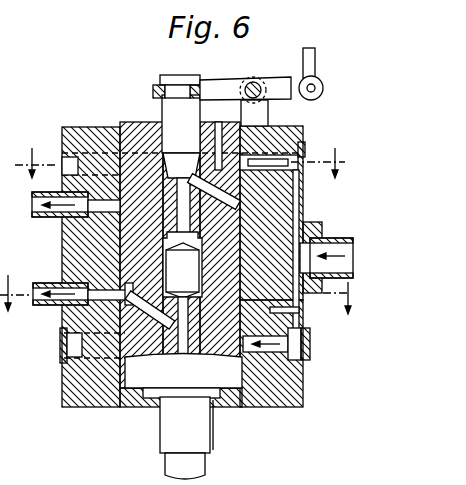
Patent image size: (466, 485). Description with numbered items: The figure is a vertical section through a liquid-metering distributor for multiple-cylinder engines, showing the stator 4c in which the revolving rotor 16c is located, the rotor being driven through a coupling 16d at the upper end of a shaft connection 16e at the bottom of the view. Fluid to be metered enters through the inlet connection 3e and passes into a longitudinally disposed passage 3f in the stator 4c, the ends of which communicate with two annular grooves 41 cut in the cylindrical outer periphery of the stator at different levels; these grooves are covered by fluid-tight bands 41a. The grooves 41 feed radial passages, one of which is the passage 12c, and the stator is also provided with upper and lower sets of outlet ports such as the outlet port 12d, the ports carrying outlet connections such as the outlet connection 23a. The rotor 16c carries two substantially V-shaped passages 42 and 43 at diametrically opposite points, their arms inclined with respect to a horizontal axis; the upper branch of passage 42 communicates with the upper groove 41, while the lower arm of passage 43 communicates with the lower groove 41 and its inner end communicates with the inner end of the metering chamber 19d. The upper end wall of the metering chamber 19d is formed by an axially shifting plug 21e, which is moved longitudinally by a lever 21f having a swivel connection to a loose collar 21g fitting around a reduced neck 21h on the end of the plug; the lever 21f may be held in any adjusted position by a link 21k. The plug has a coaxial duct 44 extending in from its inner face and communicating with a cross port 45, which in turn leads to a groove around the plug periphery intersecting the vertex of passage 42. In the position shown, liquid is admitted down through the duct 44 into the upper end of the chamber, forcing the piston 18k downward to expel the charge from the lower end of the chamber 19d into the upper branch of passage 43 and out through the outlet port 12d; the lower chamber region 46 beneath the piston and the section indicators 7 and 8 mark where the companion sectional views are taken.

The loose collar 21g is at (181, 80).
The reduced neck 21h is at (187, 91).
The lever 21f is at (238, 84).
The link 21k is at (315, 61).
The axially shifting plug 21e is at (166, 115).
The radial passage 12c is at (302, 128).
The rotor 16c is at (135, 122).
The annular groove 41 is at (73, 155).
The tight band 41a is at (66, 347).
The cross port 45 is at (178, 160).
The V-shaped passage 42 is at (217, 135).
The coaxial duct 44 is at (245, 218).
The metering chamber 19d is at (235, 240).
The inlet connection 3e is at (338, 240).
The longitudinally disposed passage 3f is at (293, 310).
The stator 4c is at (296, 392).
The outlet connection 23a is at (53, 217).
The outlet port 12d is at (105, 205).
The piston 18k is at (175, 265).
The V-shaped passage 43 is at (153, 337).
The chamber 46 is at (184, 333).
The coupling 16d is at (167, 445).
The shaft connection 16e is at (206, 462).
The section line 7- 7 is at (182, 155).
The section line 8- 8 is at (182, 289).